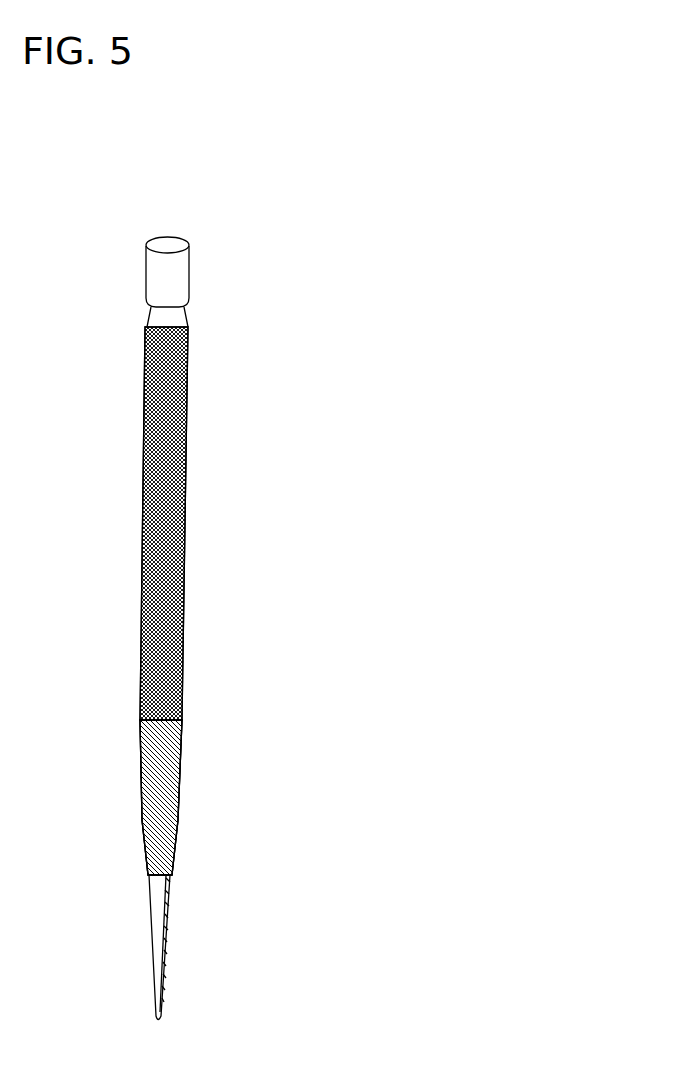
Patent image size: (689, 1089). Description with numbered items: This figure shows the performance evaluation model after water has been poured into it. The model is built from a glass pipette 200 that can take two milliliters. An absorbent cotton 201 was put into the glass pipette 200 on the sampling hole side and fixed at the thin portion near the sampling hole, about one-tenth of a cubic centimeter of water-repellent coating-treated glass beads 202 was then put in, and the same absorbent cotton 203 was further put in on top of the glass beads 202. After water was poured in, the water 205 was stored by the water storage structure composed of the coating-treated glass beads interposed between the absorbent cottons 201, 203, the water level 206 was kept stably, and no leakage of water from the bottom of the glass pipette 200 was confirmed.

The glass pipette 200 is at (190, 276).
The water level 206 is at (189, 335).
The water 205 is at (163, 631).
The absorbent cotton 201 is at (178, 797).
The coating-treated glass beads 202 is at (319, 797).
The absorbent cotton 203 is at (367, 797).